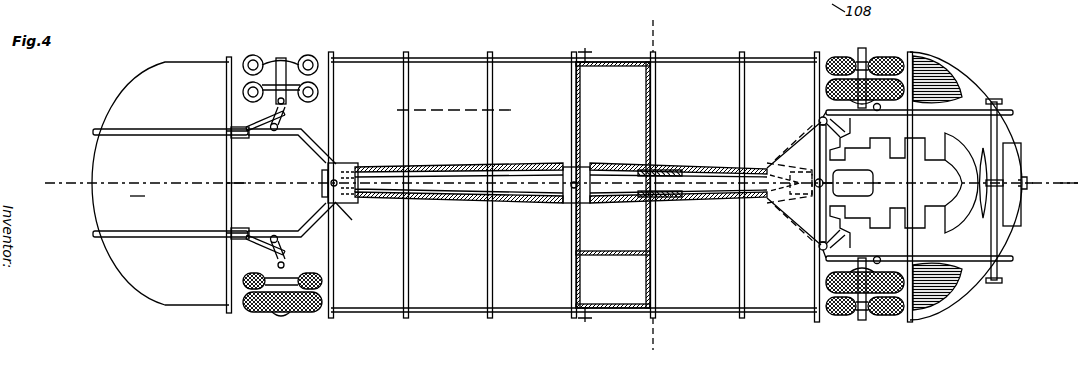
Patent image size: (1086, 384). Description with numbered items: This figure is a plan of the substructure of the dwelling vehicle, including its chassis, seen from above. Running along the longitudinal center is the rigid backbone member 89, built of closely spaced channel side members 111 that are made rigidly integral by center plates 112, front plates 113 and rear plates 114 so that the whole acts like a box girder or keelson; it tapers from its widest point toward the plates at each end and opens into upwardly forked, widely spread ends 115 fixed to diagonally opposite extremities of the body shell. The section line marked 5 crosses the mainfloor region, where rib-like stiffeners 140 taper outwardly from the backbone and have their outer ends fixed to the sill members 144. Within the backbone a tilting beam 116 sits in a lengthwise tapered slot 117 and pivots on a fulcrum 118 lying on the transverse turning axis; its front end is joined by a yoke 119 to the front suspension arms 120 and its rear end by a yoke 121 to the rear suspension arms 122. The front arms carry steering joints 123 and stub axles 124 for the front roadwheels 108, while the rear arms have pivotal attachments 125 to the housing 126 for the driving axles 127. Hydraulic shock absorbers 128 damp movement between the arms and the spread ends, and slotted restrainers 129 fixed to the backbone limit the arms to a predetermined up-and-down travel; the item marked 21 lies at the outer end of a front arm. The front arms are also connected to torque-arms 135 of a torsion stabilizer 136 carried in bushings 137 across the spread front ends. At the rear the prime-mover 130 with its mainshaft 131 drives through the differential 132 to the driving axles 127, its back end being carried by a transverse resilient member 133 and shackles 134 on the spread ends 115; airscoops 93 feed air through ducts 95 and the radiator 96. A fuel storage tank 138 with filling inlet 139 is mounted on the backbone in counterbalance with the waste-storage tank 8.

The section line 5 is at (450, 104).
The waste-storage tank 8 is at (613, 268).
The axle bar end 21 is at (230, 129).
The backbone member 89 is at (540, 165).
The airscoops 93 is at (937, 70).
The ducts 95 is at (992, 101).
The radiator 96 is at (1020, 213).
The roadwheels 108 is at (308, 58).
The side members 111 is at (430, 200).
The center plates 112 is at (578, 168).
The front plates 113 is at (346, 204).
The rear plates 114 is at (808, 147).
The spread ends 115 is at (168, 139).
The tilting beam 116 is at (537, 187).
The tapered slot 117 is at (600, 206).
The fulcrum 118 is at (677, 203).
The yoke 119 is at (333, 220).
The front suspension arms 120 is at (331, 183).
The yoke 121 is at (790, 214).
The rear suspension arms 122 is at (820, 134).
The steering joints 123 is at (290, 98).
The stub axles 124 is at (290, 64).
The pivotal attachments 125 is at (856, 104).
The housing 126 is at (904, 183).
The driving axles 127 is at (861, 56).
The hydraulic shock absorbers 128 is at (268, 133).
The slotted restrainers 129 is at (322, 242).
The prime-mover 130 is at (967, 238).
The mainshaft 131 is at (947, 180).
The differential 132 is at (847, 183).
The transverse resilient member 133 is at (998, 134).
The shackles 134 is at (1000, 100).
The torque-arms 135 is at (246, 126).
The torsion stabilizer 136 is at (222, 183).
The bushings 137 is at (239, 137).
The fuel storage tank 138 is at (613, 185).
The filling inlet 139 is at (583, 52).
The stiffeners 140 is at (488, 135).
The sill members 144 is at (479, 62).